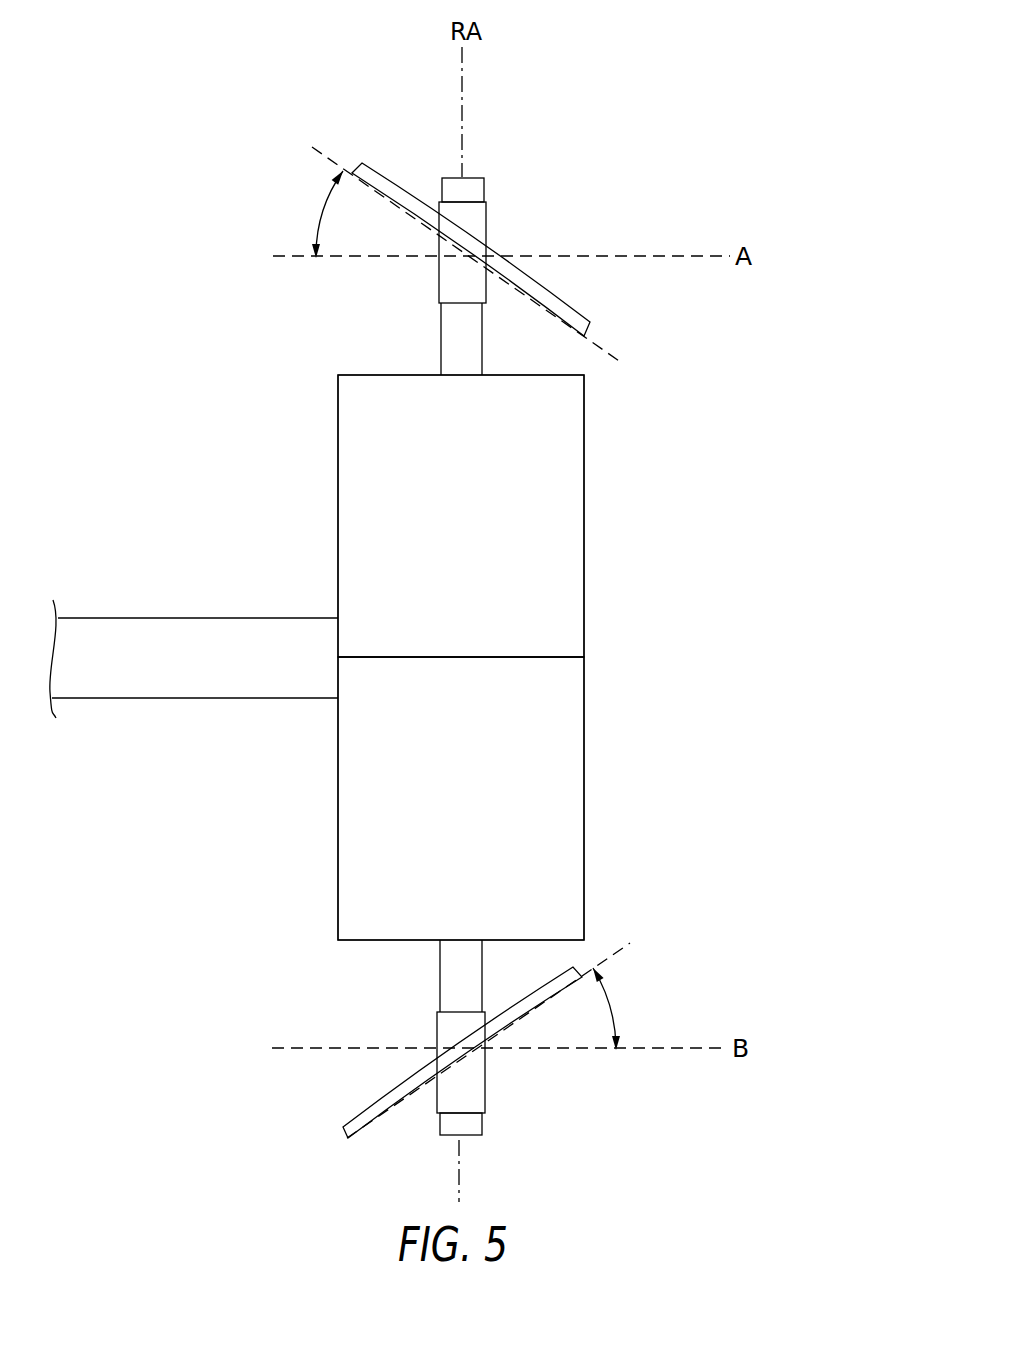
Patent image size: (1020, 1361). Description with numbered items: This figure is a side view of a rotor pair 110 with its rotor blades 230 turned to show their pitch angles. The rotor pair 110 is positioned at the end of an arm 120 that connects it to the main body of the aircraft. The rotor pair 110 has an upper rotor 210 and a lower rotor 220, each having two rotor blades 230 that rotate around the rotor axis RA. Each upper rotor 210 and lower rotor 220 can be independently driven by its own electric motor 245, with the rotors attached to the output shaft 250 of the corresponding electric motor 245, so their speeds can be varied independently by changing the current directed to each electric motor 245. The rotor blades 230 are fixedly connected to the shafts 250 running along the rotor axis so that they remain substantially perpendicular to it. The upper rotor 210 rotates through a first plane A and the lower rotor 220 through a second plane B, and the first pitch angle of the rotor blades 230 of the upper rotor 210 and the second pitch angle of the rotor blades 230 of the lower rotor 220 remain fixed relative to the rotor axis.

The rotor pair 110 is at (735, 159).
The arm 120 is at (162, 618).
The upper rotor 210 is at (534, 174).
The lower rotor 220 is at (345, 1131).
The rotor blades 230 is at (561, 296).
The electric motor 245 is at (547, 543).
The output shaft 250 is at (441, 338).